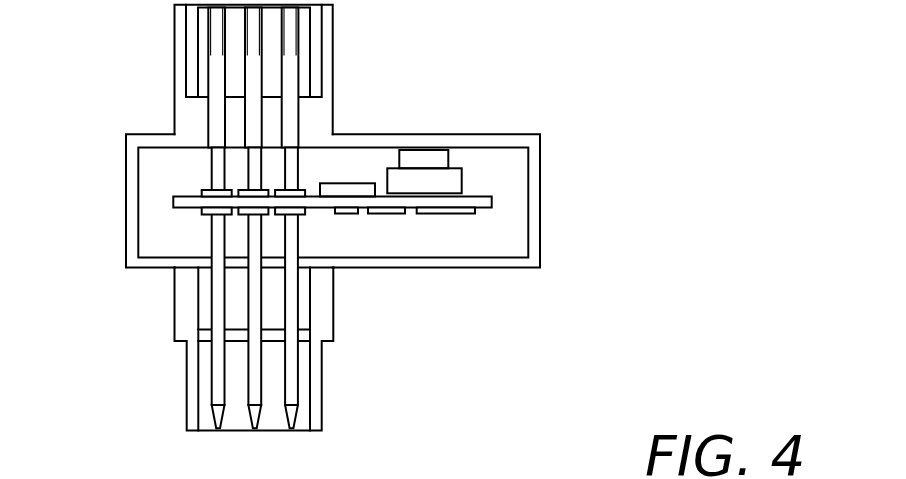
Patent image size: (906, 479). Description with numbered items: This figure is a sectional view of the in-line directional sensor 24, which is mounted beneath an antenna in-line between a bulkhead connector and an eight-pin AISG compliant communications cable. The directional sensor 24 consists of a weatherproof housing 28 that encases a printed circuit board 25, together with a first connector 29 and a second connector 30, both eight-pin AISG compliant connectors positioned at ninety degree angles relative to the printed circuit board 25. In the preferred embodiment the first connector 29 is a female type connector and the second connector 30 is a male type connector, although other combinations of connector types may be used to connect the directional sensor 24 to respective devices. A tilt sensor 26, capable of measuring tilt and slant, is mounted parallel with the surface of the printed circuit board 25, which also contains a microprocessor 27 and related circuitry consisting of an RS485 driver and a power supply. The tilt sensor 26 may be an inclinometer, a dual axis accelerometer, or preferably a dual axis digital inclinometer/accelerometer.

The in-line directional sensor 24 is at (362, 218).
The printed circuit board 25 is at (492, 197).
The tilt sensor 26 is at (448, 168).
The microprocessor 27 is at (348, 183).
The weatherproof housing 28 is at (482, 268).
The first connector 29 is at (174, 39).
The second connector 30 is at (187, 397).